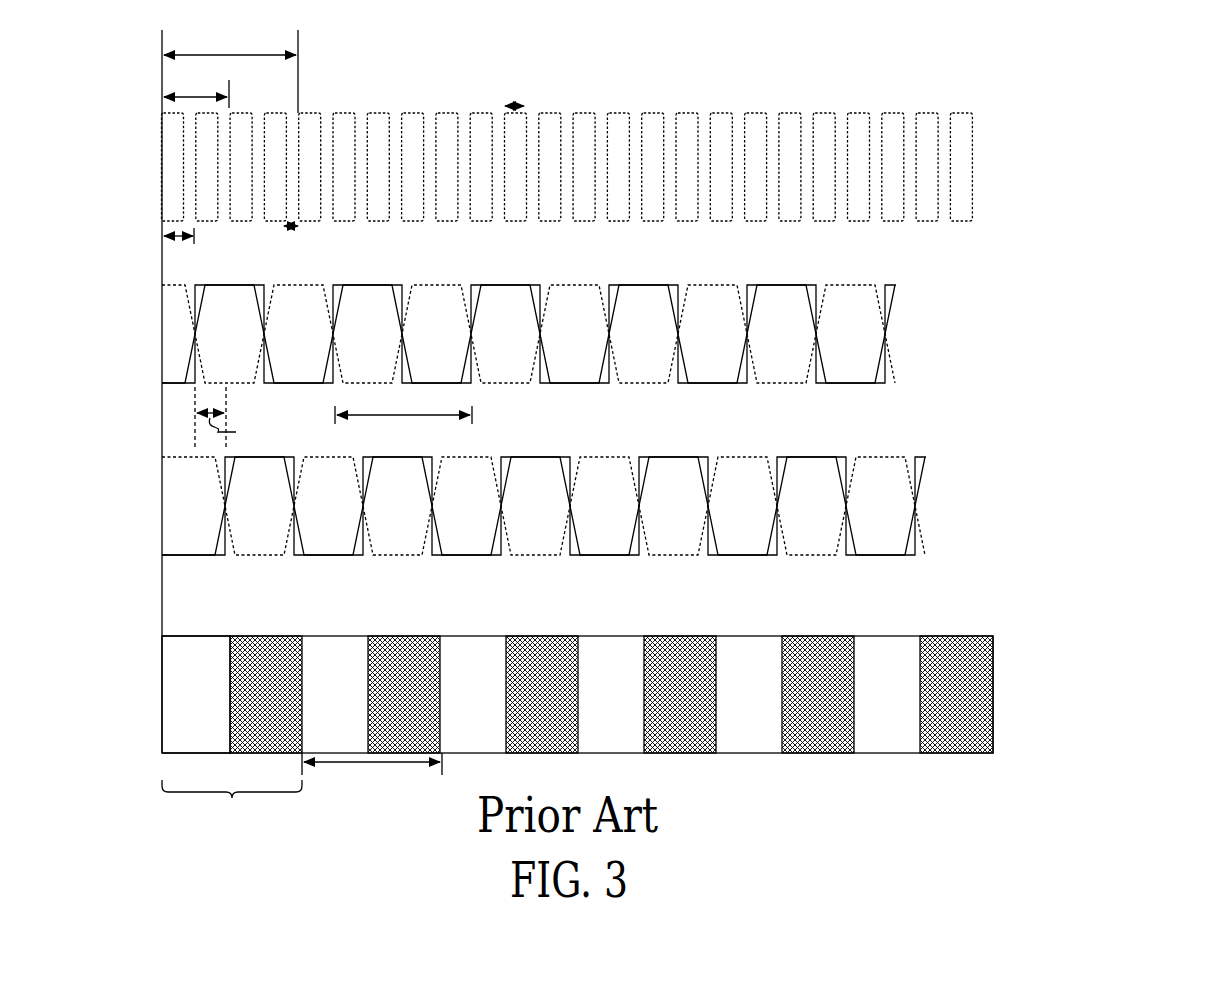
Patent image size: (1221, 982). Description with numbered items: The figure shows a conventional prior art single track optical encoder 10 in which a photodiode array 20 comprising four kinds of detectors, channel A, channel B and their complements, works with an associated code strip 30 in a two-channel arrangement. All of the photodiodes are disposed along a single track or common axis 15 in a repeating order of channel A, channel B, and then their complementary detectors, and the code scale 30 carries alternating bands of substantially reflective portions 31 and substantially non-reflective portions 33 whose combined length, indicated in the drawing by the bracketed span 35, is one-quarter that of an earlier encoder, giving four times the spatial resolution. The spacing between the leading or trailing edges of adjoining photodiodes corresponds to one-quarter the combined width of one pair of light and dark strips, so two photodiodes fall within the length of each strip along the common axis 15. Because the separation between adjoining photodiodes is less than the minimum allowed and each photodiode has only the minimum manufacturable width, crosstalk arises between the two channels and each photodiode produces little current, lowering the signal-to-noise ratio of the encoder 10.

The single track optical encoder 10 is at (1140, 108).
The common axis 15 is at (162, 167).
The photodiode array 20 is at (978, 115).
The code strip 30 is at (1007, 638).
The substantially reflective portion 31 is at (189, 648).
The substantially non-reflective portion 33 is at (263, 648).
The scale period 35 is at (232, 805).